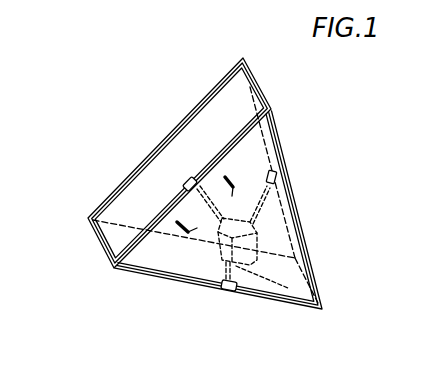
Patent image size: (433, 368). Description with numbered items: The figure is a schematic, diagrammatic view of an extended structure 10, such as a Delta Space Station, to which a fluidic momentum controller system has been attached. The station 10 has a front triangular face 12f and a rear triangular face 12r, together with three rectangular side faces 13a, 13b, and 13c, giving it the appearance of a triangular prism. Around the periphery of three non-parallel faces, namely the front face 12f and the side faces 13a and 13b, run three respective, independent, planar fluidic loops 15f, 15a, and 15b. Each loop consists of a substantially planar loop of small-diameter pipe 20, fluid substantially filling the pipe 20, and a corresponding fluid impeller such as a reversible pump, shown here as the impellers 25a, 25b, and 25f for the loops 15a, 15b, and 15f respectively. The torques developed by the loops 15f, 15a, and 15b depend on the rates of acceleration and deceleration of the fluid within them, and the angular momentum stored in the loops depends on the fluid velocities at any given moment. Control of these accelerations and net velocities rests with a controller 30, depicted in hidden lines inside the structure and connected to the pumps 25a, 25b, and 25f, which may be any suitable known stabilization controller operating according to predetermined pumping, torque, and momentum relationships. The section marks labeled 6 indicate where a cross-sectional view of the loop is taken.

The extended structure 10 is at (154, 67).
The rectangular side face 13a is at (230, 102).
The rectangular side face 13b is at (291, 230).
The rectangular side face 13c is at (197, 268).
The rear triangular face 12r is at (143, 182).
The front triangular face 12f is at (261, 170).
The planar fluidic loop 15a is at (99, 242).
The planar fluidic loop 15b is at (282, 142).
The planar fluidic loop 15f is at (281, 294).
The pipe 20 is at (141, 272).
The fluid impeller 25a is at (187, 181).
The fluid impeller 25b is at (288, 188).
The fluid impeller 25f is at (230, 294).
The controller 30 is at (316, 287).
The section line 6- 6 is at (208, 211).